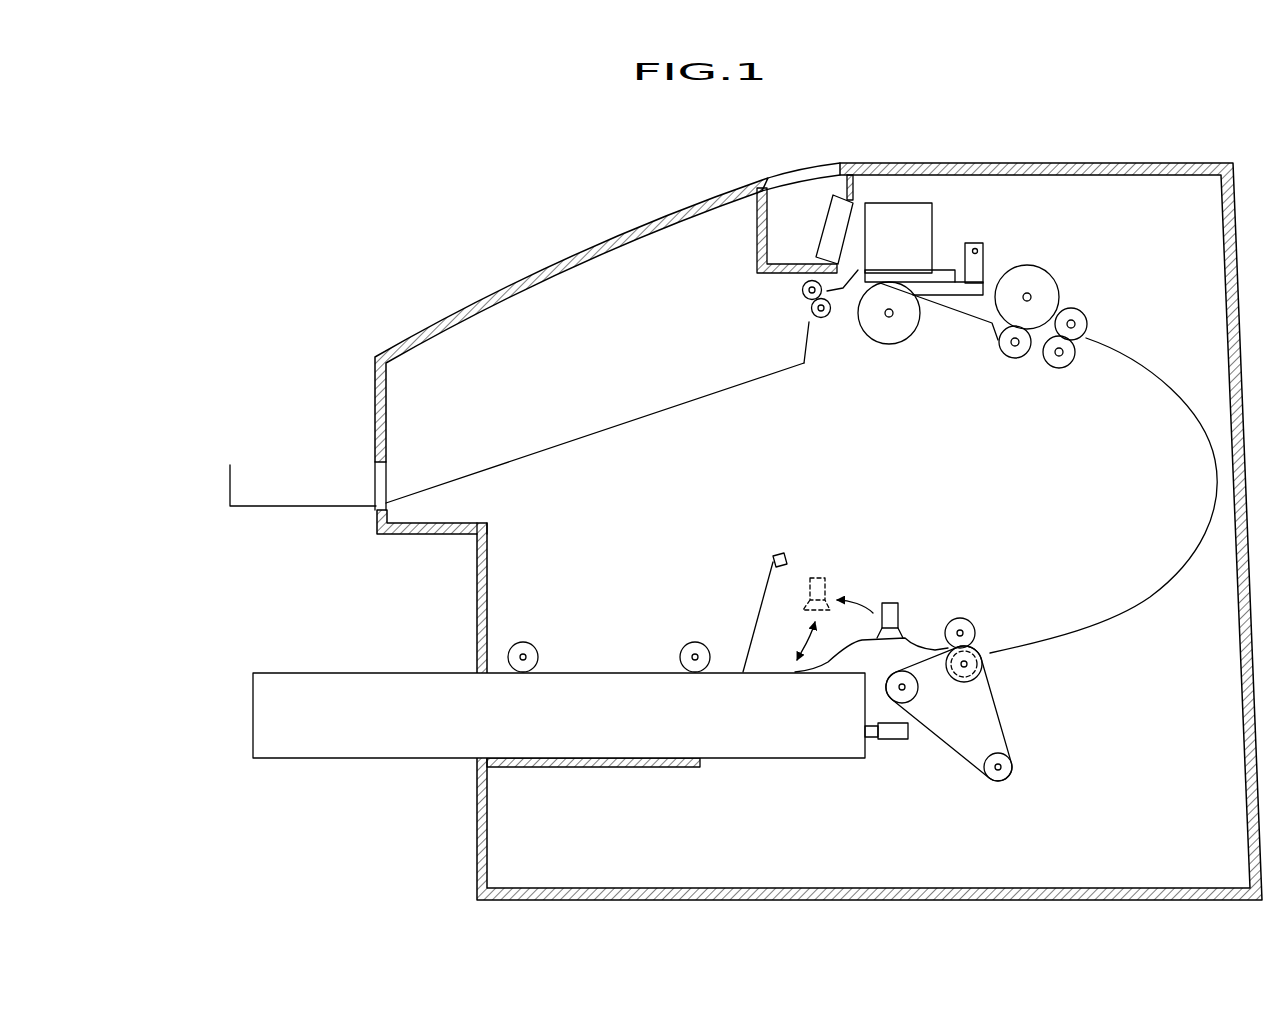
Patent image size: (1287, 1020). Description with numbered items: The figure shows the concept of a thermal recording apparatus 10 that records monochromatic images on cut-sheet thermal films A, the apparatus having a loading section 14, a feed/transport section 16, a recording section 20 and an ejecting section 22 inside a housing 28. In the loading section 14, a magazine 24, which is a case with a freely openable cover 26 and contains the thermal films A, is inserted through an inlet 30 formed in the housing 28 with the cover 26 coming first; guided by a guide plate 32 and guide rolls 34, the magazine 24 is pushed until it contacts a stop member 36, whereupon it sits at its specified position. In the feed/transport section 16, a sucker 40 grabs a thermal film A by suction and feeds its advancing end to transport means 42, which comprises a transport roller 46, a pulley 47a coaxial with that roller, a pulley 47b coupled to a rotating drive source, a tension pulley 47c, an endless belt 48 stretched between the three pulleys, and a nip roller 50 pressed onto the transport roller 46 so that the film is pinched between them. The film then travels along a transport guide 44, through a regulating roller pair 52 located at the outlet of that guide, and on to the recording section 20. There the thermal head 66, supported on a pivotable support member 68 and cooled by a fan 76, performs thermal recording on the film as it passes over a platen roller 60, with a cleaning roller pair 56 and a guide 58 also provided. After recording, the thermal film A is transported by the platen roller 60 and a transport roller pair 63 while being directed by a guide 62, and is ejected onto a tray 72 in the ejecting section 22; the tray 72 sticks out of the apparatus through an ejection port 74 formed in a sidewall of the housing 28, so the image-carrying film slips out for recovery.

The thermal recording apparatus 10 is at (452, 222).
The housing 28 is at (618, 227).
The ejection port 74 is at (395, 484).
The ejecting section 22 is at (600, 378).
The tray 72 is at (630, 425).
The transport roller pair 63 is at (809, 326).
The fan 76 is at (843, 210).
The thermal head 66 is at (915, 197).
The support member 68 is at (945, 318).
The guide 58 is at (957, 300).
The guide 62 is at (834, 296).
The platen roller 60 is at (903, 332).
The recording section 20 is at (884, 378).
The cleaning roller pair 56 is at (1008, 360).
The regulating roller pair 52 is at (1062, 370).
The transport guide 44 is at (1173, 387).
The feed/transport section 16 is at (1020, 487).
The loading section 14 is at (623, 598).
The inlet 30 is at (460, 657).
The guide rolls 34 is at (530, 643).
The cover 26 is at (762, 588).
The guide plate 32 is at (575, 769).
The magazine 24 is at (753, 740).
The stop member 36 is at (885, 740).
The thermal film A is at (918, 640).
The sucker 40 is at (888, 603).
The nip roller 50 is at (975, 632).
The endless belt 48 is at (1002, 708).
The pulley 47a is at (983, 672).
The transport roller 46 is at (962, 680).
The pulley 47b is at (1003, 779).
The tension pulley 47c is at (916, 705).
The transport means 42 is at (1040, 750).